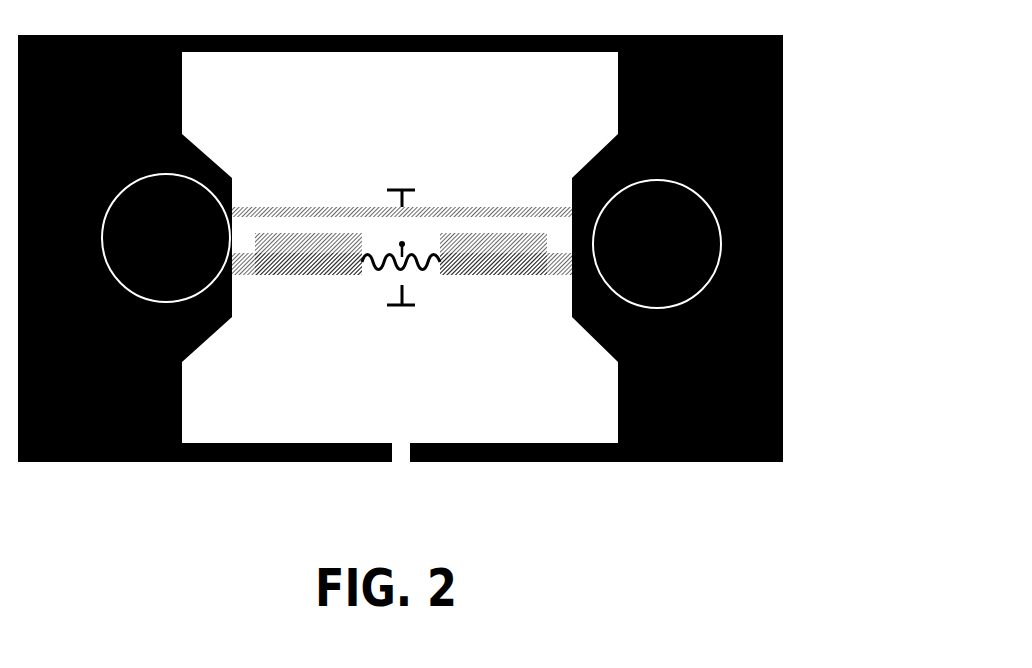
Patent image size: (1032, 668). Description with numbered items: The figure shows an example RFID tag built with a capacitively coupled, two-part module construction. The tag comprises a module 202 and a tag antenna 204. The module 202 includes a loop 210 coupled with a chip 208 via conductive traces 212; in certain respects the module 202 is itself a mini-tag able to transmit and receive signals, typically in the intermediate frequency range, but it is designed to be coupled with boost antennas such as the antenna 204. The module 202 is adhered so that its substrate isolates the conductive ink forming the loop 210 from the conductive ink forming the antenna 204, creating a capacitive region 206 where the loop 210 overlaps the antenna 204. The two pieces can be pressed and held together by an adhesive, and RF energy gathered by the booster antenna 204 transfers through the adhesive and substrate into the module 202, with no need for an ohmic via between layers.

The module 202 is at (258, 208).
The tag antenna 204 is at (783, 155).
The capacitive region 206 is at (145, 302).
The chip 208 is at (404, 246).
The loop 210 is at (286, 276).
The conductive traces 212 is at (430, 272).